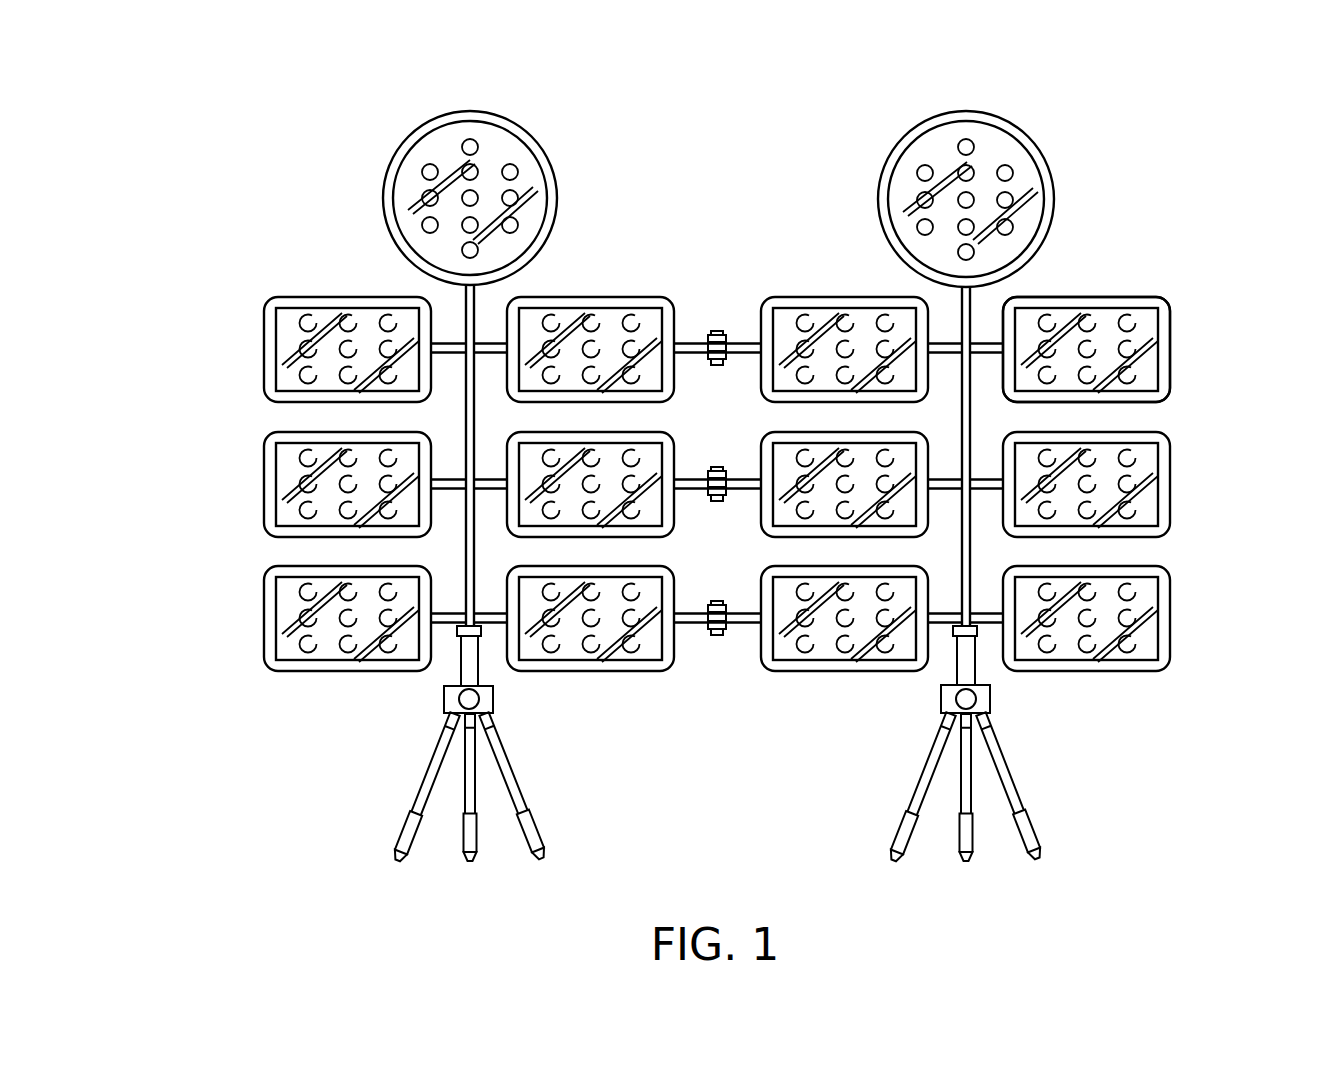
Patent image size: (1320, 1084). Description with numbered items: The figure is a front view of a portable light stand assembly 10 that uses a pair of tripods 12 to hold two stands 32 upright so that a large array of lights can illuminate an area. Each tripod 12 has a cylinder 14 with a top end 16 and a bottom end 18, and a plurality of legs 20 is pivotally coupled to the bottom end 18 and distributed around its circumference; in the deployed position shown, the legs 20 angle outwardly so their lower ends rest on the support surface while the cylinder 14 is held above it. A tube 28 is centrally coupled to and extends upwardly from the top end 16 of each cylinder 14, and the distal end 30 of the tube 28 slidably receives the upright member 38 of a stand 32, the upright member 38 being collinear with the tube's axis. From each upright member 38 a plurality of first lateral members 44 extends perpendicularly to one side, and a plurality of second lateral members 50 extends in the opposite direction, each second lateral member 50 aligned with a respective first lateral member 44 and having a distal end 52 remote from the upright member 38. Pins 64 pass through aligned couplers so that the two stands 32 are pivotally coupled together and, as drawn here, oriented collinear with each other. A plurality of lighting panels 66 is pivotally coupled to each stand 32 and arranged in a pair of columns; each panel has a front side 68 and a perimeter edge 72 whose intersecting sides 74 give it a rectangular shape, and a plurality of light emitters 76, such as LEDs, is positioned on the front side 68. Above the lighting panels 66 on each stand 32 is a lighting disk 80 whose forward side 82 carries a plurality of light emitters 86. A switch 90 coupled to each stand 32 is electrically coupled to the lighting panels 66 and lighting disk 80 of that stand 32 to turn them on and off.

The portable light stand assembly 10 is at (200, 192).
The tripod 12 is at (416, 780).
The cylinder 14 is at (495, 700).
The top end 16 is at (447, 690).
The bottom end 18 is at (505, 745).
The legs 20 is at (458, 815).
The tube 28 is at (952, 660).
The distal end 30 is at (990, 628).
The stand 32 is at (484, 310).
The upright member 38 is at (978, 305).
The first lateral members 44 is at (458, 422).
The second lateral members 50 is at (748, 480).
The distal end 52 is at (715, 332).
The pins 64 is at (718, 366).
The lighting panels 66 is at (265, 455).
The front side 68 is at (290, 487).
The perimeter edge 72 is at (282, 672).
The intersecting sides 74 is at (1125, 297).
The light emitters 76 is at (1133, 645).
The lighting disks 80 is at (520, 135).
The forward side 82 is at (415, 165).
The light emitters 86 is at (516, 224).
The switches 90 is at (470, 705).